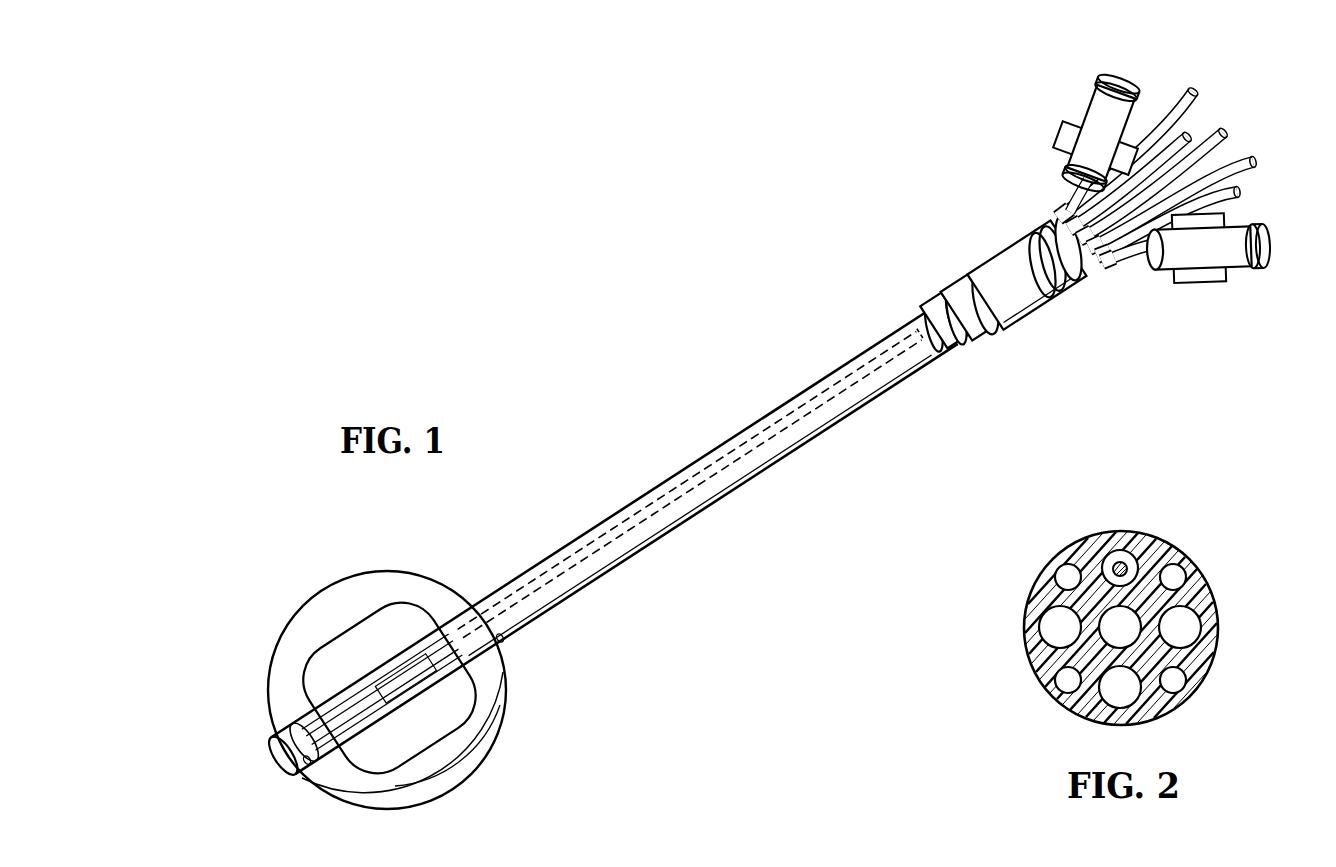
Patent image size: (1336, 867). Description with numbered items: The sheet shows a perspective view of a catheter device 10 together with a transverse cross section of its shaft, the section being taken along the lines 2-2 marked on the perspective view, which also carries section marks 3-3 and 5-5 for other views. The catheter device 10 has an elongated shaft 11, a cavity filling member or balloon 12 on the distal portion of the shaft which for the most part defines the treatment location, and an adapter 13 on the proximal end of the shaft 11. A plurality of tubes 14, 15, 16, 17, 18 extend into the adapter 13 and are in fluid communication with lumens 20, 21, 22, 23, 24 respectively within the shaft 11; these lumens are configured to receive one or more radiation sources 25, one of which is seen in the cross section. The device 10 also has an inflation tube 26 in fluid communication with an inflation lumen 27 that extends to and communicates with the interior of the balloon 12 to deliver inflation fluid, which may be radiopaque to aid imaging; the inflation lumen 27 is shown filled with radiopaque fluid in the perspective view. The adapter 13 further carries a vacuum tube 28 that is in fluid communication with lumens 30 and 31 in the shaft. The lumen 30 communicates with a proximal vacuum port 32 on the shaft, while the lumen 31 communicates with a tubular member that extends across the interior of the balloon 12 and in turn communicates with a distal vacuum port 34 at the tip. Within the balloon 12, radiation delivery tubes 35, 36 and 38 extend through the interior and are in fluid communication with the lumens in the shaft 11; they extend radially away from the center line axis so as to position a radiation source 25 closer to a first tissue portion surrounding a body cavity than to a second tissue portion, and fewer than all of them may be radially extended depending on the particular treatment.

In FIG. 1, the catheter device 10 is at (614, 540).
In FIG. 1, the elongated shaft 11 is at (700, 505).
In FIG. 2, the elongated shaft 11 is at (1150, 553).
In FIG. 1, the balloon 12 is at (268, 678).
In FIG. 1, the adapter 13 is at (1006, 288).
In FIG. 1, the tube 14 is at (1197, 97).
In FIG. 1, the tube 15 is at (1193, 140).
In FIG. 1, the tube 16 is at (1228, 136).
In FIG. 1, the tube 17 is at (1258, 165).
In FIG. 1, the tube 18 is at (1242, 195).
In FIG. 2, the lumen 20 is at (1106, 556).
In FIG. 2, the lumen 21 is at (1190, 633).
In FIG. 2, the lumen 22 is at (1133, 697).
In FIG. 2, the lumen 23 is at (1052, 620).
In FIG. 2, the lumen 24 is at (1117, 638).
In FIG. 2, the radiation source 25 is at (1122, 561).
In FIG. 1, the inflation tube 26 is at (1078, 187).
In FIG. 1, the inflation lumen 27 is at (690, 484).
In FIG. 2, the inflation lumen 27 is at (1177, 578).
In FIG. 1, the vacuum tube 28 is at (1143, 257).
In FIG. 2, the lumen 30 is at (1060, 568).
In FIG. 2, the lumen 31 is at (1067, 683).
In FIG. 1, the proximal vacuum port 32 is at (503, 641).
In FIG. 1, the distal vacuum port 34 is at (294, 749).
In FIG. 1, the radiation delivery tube 35 is at (389, 688).
In FIG. 1, the radiation delivery tube 36 is at (382, 691).
In FIG. 1, the radiation delivery tube 38 is at (387, 699).
In FIG. 1, the section line 2- 2 is at (593, 507).
In FIG. 1, the section line 3- 3 is at (310, 578).
In FIG. 1, the section line 5- 5 is at (400, 688).